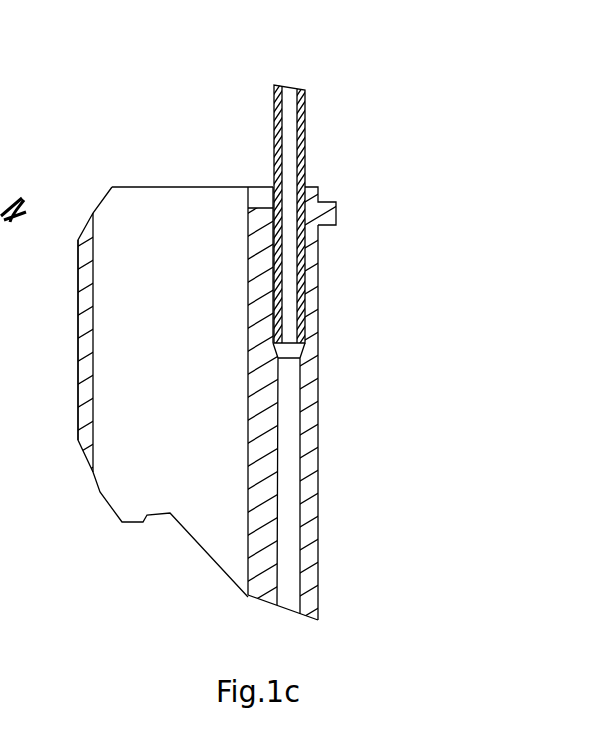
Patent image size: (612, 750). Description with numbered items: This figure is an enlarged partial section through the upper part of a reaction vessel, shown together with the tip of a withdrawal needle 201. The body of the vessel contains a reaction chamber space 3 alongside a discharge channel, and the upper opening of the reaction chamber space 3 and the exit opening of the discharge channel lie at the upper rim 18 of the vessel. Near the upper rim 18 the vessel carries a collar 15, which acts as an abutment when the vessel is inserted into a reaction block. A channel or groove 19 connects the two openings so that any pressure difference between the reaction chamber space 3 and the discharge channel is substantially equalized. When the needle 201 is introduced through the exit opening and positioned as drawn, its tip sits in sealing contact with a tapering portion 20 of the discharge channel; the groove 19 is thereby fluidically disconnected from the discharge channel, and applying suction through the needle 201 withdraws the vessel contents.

The reaction chamber space 3 is at (133, 210).
The upper rim 18 is at (170, 187).
The channel or groove 19 is at (260, 193).
The collar 15 is at (327, 202).
The tapering portion 20 is at (305, 335).
The needle 201 is at (277, 98).